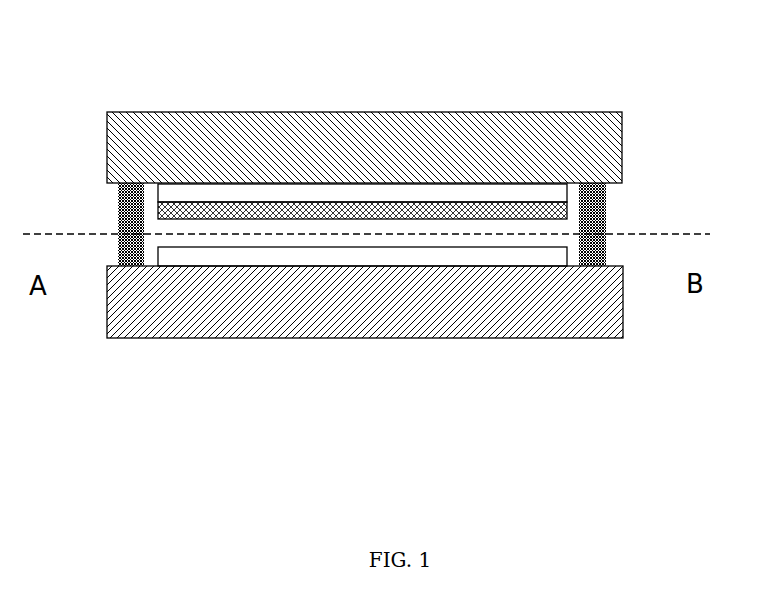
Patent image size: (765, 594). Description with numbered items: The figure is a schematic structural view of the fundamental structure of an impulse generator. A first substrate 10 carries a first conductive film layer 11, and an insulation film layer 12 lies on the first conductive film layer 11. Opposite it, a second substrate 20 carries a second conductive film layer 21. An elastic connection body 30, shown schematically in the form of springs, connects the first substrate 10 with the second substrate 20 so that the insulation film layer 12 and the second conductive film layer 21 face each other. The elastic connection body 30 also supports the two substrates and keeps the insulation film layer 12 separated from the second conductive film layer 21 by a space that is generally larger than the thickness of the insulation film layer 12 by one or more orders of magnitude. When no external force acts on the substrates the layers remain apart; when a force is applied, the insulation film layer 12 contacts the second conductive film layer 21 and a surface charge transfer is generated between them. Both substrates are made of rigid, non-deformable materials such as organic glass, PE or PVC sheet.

The first substrate 10 is at (232, 150).
The first conductive film layer 11 is at (416, 193).
The insulation film layer 12 is at (510, 211).
The second substrate 20 is at (273, 305).
The second conductive film layer 21 is at (447, 257).
The elastic connection body 30 is at (600, 243).